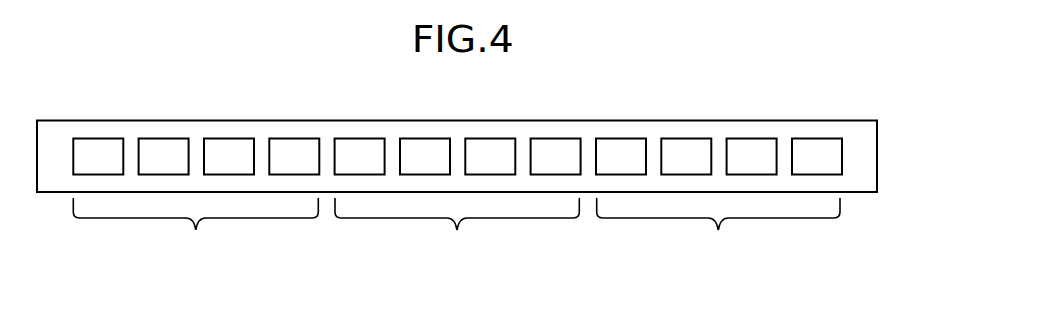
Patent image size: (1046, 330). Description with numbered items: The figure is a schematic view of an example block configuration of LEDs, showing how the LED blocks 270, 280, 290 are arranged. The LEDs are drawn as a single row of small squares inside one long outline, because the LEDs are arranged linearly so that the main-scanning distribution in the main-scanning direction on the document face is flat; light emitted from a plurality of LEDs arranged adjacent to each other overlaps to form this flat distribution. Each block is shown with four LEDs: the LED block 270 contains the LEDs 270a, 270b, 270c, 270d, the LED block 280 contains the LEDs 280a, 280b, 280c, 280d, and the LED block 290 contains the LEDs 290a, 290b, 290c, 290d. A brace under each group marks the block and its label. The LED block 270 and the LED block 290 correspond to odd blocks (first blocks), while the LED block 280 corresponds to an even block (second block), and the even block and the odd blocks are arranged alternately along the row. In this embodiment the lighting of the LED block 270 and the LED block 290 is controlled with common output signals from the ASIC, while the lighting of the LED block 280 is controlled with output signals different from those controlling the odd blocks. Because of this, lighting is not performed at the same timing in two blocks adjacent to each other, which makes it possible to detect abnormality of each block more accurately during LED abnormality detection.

The memory cell of odd block 270 270a is at (100, 138).
The memory cell of odd block 270 270b is at (166, 138).
The memory cell of odd block 270 270c is at (231, 138).
The memory cell of odd block 270 270d is at (296, 138).
The memory cell of even block 280 280a is at (362, 138).
The memory cell of even block 280 280b is at (427, 138).
The memory cell of even block 280 280c is at (492, 138).
The memory cell of even block 280 280d is at (558, 138).
The memory cell of odd block 290 290a is at (623, 138).
The memory cell of odd block 290 290b is at (688, 138).
The memory cell of odd block 290 290c is at (754, 138).
The memory cell of odd block 290 290d is at (819, 138).
The LED block 270 is at (196, 267).
The LED block 280 is at (458, 267).
The LED block 290 is at (719, 267).